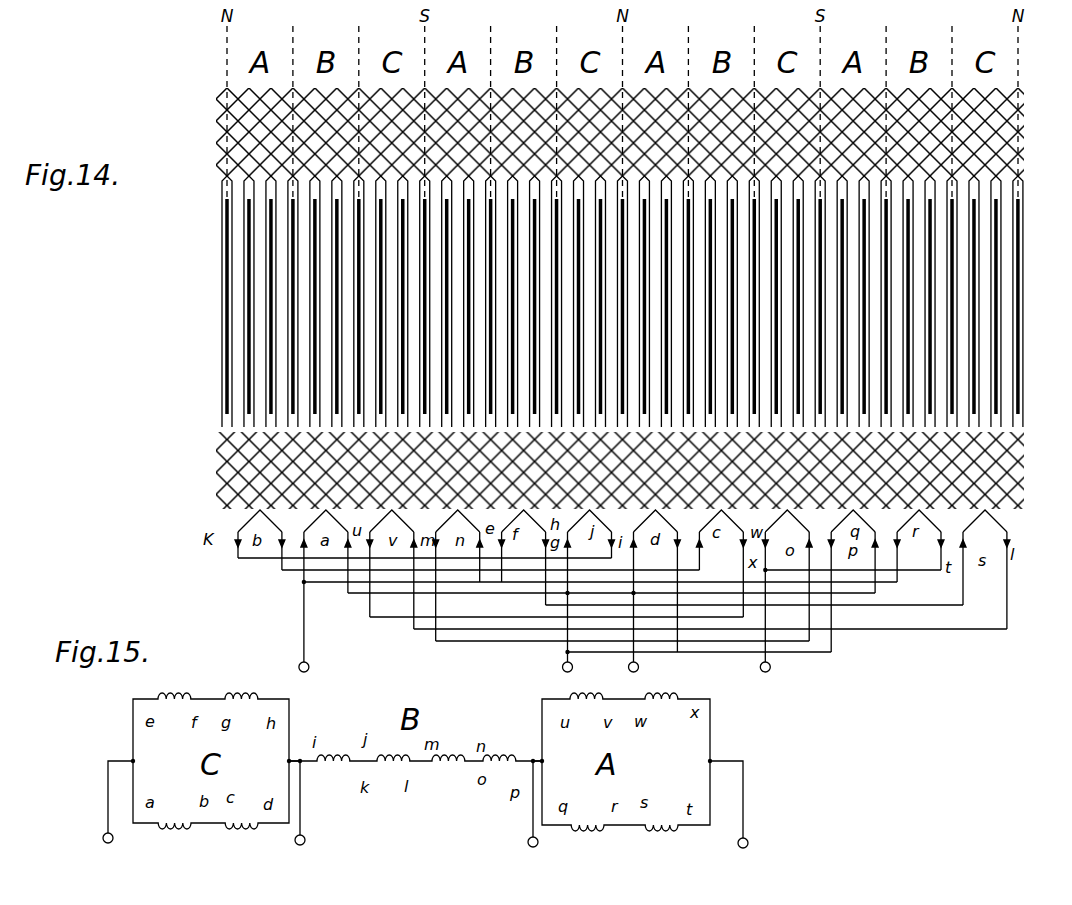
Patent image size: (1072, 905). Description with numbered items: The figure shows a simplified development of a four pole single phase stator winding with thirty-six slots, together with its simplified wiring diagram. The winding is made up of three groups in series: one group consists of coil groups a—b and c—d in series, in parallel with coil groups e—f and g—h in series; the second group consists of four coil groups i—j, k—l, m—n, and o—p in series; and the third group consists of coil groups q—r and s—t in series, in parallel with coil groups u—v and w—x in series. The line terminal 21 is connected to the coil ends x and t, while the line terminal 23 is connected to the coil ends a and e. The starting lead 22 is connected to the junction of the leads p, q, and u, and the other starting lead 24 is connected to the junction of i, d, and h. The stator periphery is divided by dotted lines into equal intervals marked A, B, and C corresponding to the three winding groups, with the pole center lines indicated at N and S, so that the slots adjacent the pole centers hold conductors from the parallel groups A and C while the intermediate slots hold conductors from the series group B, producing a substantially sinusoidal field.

In FIG. 14, the line terminal 21 is at (771, 667).
In FIG. 15, the line terminal 21 is at (748, 841).
In FIG. 14, the starting lead 22 is at (639, 668).
In FIG. 15, the starting lead 22 is at (538, 842).
In FIG. 14, the line terminal 23 is at (309, 665).
In FIG. 15, the line terminal 23 is at (113, 838).
In FIG. 14, the starting lead 24 is at (573, 667).
In FIG. 15, the starting lead 24 is at (305, 839).